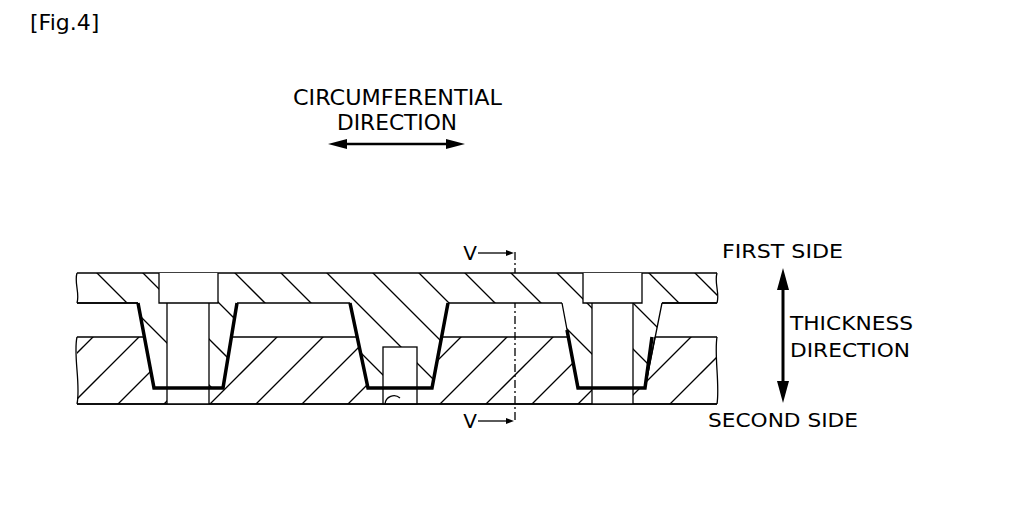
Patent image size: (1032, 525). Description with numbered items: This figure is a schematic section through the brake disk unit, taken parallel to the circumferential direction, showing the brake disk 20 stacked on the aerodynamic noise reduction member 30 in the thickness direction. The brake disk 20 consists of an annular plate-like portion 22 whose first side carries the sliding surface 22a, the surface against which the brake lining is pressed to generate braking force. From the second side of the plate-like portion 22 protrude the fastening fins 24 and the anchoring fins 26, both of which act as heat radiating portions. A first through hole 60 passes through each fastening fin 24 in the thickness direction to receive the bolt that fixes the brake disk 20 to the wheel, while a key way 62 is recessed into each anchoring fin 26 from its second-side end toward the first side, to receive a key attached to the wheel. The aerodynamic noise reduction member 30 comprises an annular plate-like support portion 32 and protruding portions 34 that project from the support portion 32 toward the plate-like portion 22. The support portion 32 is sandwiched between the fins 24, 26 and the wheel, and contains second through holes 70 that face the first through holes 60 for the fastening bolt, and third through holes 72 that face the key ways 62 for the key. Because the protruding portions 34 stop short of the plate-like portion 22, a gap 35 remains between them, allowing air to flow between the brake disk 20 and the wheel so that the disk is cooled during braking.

The brake disk 20 is at (90, 262).
The plate-like portion 22 is at (307, 287).
The sliding surface 22a is at (403, 272).
The fastening fin 24 is at (148, 332).
The anchoring fin 26 is at (370, 330).
The aerodynamic noise reduction member 30 is at (90, 411).
The support portion 32 is at (270, 398).
The protruding portion 34 is at (95, 357).
The gap 35 is at (287, 324).
The first through hole 60 is at (207, 322).
The key way 62 is at (412, 374).
The second through hole 70 is at (173, 396).
The third through hole 72 is at (395, 403).